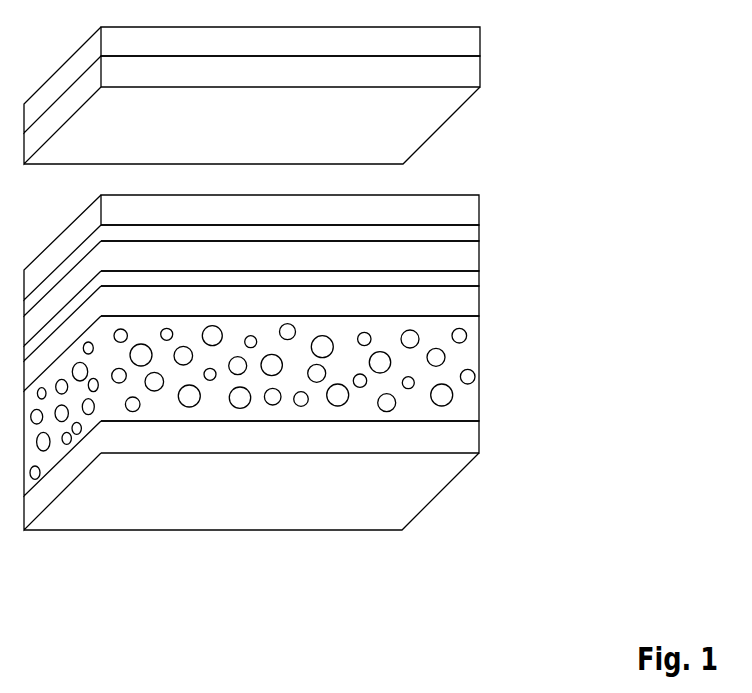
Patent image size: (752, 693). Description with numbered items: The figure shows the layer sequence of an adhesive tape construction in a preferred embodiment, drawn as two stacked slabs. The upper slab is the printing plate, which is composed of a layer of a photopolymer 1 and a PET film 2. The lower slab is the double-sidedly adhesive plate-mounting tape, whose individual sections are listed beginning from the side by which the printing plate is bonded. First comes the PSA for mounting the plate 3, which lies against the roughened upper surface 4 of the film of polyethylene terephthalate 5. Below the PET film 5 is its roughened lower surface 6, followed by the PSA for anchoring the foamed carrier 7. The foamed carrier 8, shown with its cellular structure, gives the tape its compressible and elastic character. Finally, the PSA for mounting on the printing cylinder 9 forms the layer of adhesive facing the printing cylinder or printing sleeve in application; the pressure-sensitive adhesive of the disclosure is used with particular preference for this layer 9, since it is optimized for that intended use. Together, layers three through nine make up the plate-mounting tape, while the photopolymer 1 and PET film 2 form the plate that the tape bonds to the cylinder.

The layer of a photopolymer 1 is at (467, 45).
The PET film 2 is at (464, 81).
The PSA for mounting the plate 3 is at (463, 207).
The roughened upper surface of the PET film 4 is at (467, 233).
The film of polyethylene terephthalate (PET) 5 is at (465, 259).
The roughened lower surface of the PET film 6 is at (467, 277).
The PSA for anchoring the foamed carrier 7 is at (467, 298).
The foamed carrier 8 is at (464, 362).
The PSA for mounting on the printing cylinder 9 is at (464, 437).